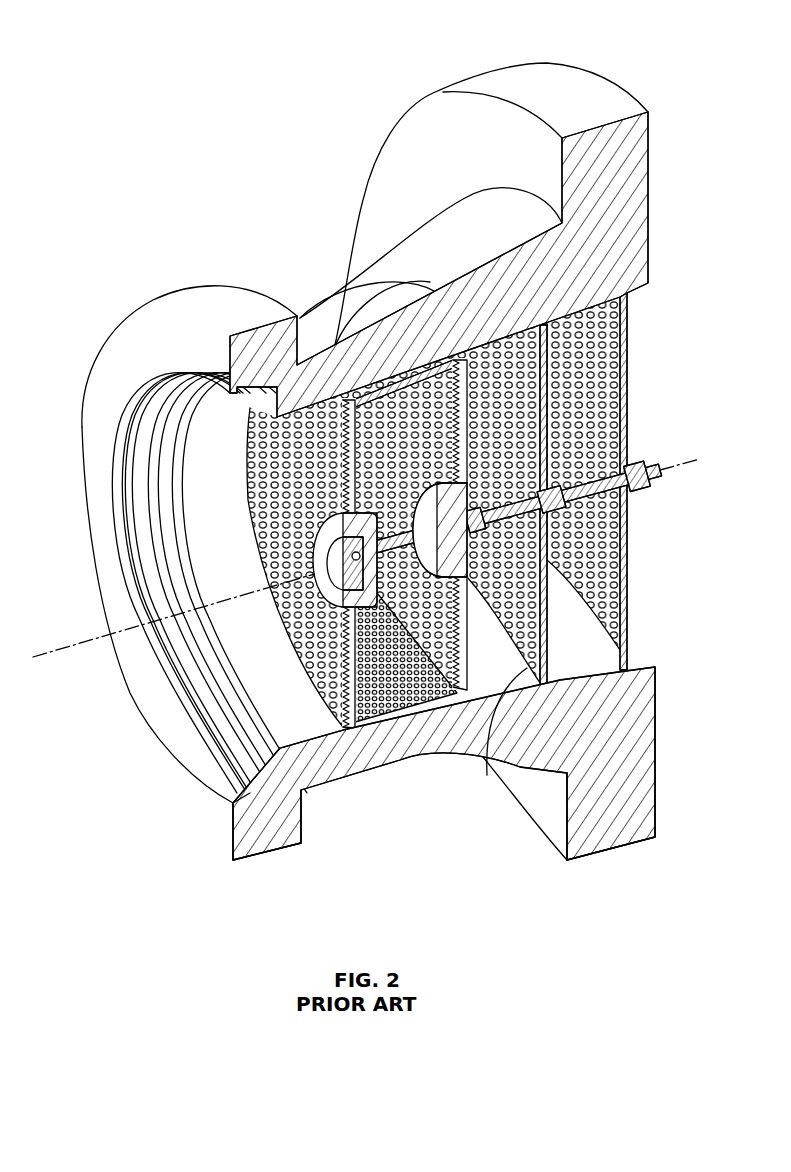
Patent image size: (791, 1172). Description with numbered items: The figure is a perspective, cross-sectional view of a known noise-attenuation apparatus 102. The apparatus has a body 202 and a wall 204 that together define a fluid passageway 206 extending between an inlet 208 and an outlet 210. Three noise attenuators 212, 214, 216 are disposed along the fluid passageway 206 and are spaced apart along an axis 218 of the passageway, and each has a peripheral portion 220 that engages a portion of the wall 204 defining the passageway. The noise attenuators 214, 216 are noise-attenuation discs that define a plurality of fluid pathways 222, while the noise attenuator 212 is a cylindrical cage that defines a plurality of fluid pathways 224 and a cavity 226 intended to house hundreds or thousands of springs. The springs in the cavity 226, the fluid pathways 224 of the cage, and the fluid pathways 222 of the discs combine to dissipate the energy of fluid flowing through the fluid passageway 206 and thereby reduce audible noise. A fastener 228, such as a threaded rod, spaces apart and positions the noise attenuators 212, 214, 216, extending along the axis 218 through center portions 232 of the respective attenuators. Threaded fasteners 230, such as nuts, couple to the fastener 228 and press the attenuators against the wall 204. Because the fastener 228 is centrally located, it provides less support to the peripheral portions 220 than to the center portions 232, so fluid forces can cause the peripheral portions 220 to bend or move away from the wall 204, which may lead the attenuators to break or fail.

The noise-attenuation apparatus 102 is at (108, 45).
The body 202 is at (185, 288).
The wall 204 is at (300, 731).
The fluid passageway 206 is at (225, 450).
The inlet 208 is at (210, 716).
The outlet 210 is at (650, 366).
The noise attenuator 212 is at (430, 755).
The noise attenuator 214 is at (527, 672).
The noise attenuator 216 is at (628, 630).
The axis 218 is at (70, 648).
The peripheral portion 220 is at (350, 398).
The fluid pathways 222 is at (617, 590).
The fluid pathways 224 is at (430, 300).
The cavity 226 is at (410, 690).
The fastener 228 is at (600, 478).
The threaded fasteners 230 is at (637, 460).
The center portions 232 is at (640, 500).